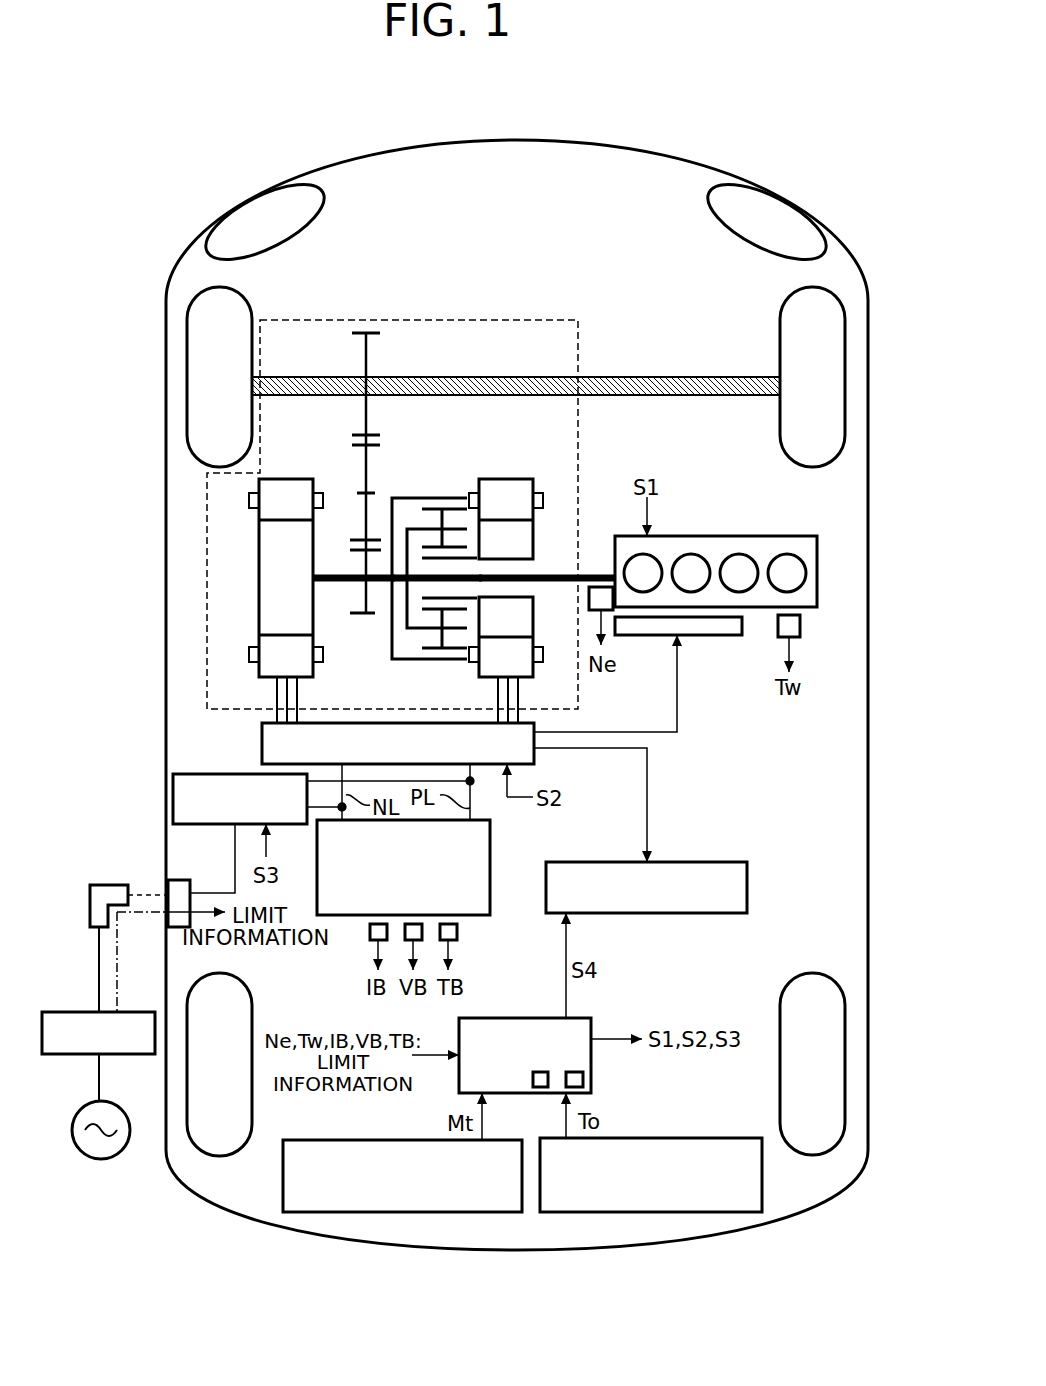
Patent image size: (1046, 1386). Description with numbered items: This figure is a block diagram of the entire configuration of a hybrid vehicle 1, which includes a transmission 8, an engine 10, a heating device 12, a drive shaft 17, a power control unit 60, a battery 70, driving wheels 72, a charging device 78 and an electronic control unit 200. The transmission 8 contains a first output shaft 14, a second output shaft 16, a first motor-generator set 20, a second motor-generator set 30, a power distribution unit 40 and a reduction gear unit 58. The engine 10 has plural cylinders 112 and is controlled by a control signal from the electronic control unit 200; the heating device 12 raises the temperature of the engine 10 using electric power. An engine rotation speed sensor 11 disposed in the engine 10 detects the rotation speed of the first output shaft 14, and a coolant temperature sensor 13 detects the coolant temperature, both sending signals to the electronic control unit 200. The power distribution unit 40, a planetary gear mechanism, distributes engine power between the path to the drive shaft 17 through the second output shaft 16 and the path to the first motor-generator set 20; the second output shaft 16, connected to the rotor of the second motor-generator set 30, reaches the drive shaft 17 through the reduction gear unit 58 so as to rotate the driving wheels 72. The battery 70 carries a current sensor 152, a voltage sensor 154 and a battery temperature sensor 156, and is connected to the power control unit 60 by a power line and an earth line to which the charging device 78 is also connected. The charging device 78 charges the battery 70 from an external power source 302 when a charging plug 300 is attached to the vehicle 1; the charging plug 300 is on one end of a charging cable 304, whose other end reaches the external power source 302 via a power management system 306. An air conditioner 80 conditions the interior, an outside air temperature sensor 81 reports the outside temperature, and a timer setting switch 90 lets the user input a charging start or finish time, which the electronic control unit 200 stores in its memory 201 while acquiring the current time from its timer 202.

The hybrid vehicle 1 is at (520, 115).
The transmission 8 is at (500, 320).
The engine 10 is at (770, 536).
The engine rotation speed sensor 11 is at (589, 598).
The heating device 12 is at (722, 636).
The coolant temperature sensor 13 is at (800, 627).
The first output shaft 14 is at (595, 574).
The second output shaft 16 is at (380, 584).
The drive shaft 17 is at (650, 377).
The first motor-generator set 20 is at (505, 479).
The second motor-generator set 30 is at (285, 479).
The power distribution unit 40 is at (453, 472).
The reduction gear unit 58 is at (367, 333).
The power control unit 60 is at (262, 745).
The battery 70 is at (490, 846).
The driving wheels 72 is at (780, 308).
The charging device 78 is at (173, 800).
The air conditioner 80 is at (695, 862).
The outside air temperature sensor 81 is at (708, 1138).
The timer setting switch 90 is at (415, 1140).
The cylinders 112 is at (691, 554).
The current sensor 152 is at (370, 935).
The voltage sensor 154 is at (405, 940).
The battery temperature sensor 156 is at (457, 930).
The electronic control unit 200 is at (510, 1018).
The memory 201 is at (583, 1080).
The timer 202 is at (540, 1087).
The charging plug 300 is at (108, 885).
The external power source 302 is at (135, 1090).
The charging cable 304 is at (98, 945).
The power management system 306 is at (70, 1012).